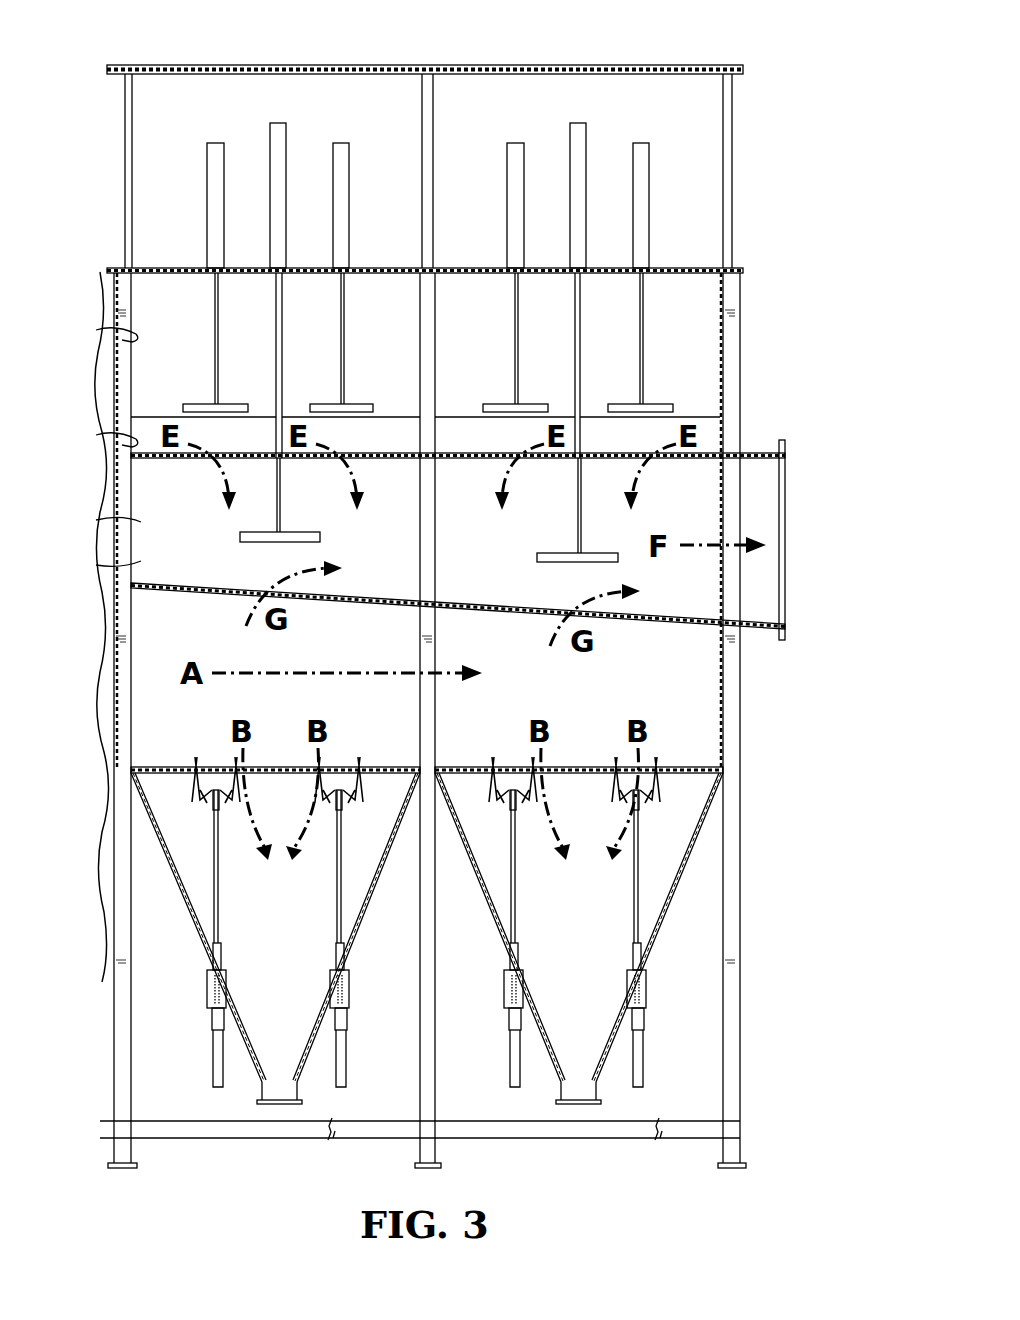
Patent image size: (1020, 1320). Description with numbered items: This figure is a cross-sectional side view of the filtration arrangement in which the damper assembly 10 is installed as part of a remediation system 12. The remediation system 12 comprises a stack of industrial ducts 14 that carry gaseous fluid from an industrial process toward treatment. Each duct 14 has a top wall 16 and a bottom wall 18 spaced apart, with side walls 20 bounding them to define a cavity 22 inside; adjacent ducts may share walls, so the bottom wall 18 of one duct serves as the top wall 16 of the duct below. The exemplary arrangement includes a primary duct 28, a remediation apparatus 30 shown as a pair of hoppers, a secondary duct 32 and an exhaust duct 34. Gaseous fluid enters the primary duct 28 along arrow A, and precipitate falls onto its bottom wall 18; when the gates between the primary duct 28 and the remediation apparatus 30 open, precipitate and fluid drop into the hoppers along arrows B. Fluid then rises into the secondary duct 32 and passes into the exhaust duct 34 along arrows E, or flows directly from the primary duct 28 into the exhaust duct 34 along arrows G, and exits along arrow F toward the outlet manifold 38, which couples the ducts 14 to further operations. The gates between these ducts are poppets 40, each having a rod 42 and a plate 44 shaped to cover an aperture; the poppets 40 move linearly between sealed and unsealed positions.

The damper assembly 10 is at (215, 1060).
The remediation system 12 is at (786, 85).
The industrial duct 14 is at (759, 383).
The top wall 16 is at (402, 273).
The bottom wall 18 is at (482, 456).
The side wall 20 is at (132, 326).
The cavity 22 is at (142, 368).
The primary duct 28 is at (153, 765).
The remediation apparatus 30 is at (172, 874).
The secondary duct 32 is at (144, 453).
The exhaust duct 34 is at (131, 585).
The outlet manifold 38 is at (786, 480).
The poppet 40 is at (216, 138).
The rod 42 is at (218, 333).
The plate 44 is at (200, 406).